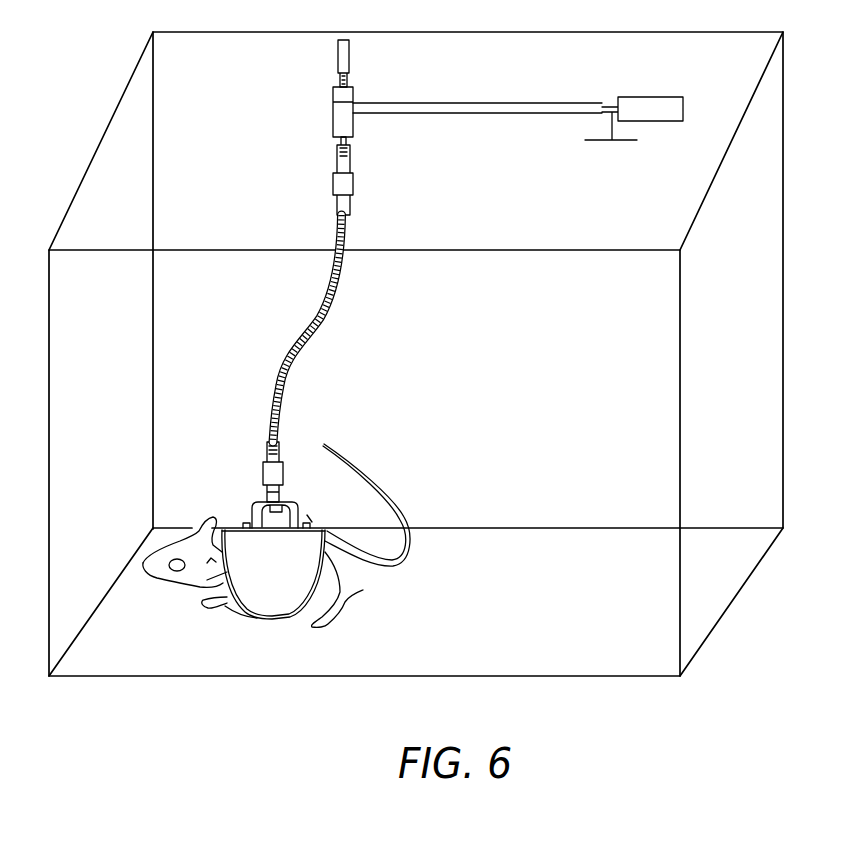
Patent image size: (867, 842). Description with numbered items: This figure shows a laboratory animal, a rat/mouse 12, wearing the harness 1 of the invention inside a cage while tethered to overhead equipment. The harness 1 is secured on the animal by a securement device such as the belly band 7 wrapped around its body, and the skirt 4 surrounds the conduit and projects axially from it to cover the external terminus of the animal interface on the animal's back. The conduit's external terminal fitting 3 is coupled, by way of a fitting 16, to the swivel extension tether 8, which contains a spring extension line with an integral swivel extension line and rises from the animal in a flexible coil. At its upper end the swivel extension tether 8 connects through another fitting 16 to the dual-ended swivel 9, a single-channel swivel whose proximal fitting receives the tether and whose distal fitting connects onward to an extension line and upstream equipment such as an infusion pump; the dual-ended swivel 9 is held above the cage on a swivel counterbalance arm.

The harness 1 is at (236, 486).
The external terminal fitting 3 is at (283, 492).
The skirt 4 is at (307, 515).
The belly band 7 is at (323, 540).
The swivel extension tether 8 is at (335, 290).
The dual-ended swivel 9 is at (332, 115).
The rat/mouse 12 is at (338, 593).
The fitting 16 is at (353, 183).